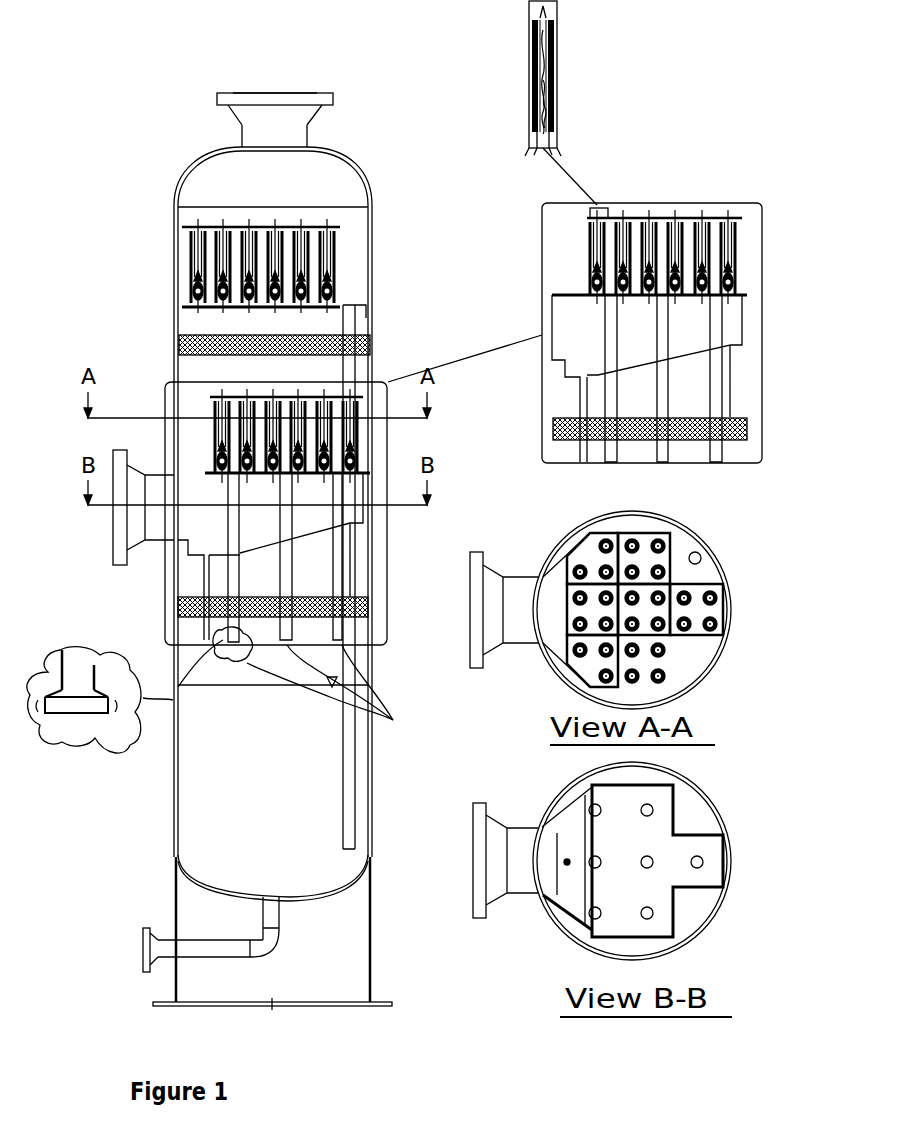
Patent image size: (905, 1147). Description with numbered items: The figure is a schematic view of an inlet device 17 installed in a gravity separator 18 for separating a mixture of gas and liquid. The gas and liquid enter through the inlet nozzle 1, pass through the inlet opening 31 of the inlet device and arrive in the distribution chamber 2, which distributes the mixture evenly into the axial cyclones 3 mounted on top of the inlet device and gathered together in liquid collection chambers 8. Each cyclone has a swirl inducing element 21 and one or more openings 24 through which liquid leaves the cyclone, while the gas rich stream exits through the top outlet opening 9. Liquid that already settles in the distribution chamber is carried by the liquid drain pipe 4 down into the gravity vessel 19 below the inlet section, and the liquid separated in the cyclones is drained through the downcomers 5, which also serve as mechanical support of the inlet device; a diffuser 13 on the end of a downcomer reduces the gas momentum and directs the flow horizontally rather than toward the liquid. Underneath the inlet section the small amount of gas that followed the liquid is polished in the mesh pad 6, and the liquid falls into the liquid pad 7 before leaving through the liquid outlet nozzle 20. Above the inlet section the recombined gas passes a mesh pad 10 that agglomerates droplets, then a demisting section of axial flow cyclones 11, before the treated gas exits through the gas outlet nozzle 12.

The inlet nozzle 1 is at (137, 520).
The distribution chamber 2 is at (307, 497).
The axial cyclone 3 is at (353, 442).
The liquid drain pipe 4 is at (212, 648).
The downcomer 5 is at (725, 765).
The mesh pad 6 is at (345, 607).
The liquid pad 7 is at (192, 793).
The liquid collection chamber 8 is at (215, 457).
The top outlet opening 9 is at (325, 397).
The mesh pad 10 is at (352, 332).
The axial flow cyclones 11 is at (333, 268).
The gas outlet nozzle 12 is at (278, 92).
The diffuser 13 is at (72, 705).
The inlet device 17 is at (542, 230).
The gravity separator 18 is at (177, 305).
The gravity vessel 19 is at (252, 367).
The liquid outlet nozzle 20 is at (195, 940).
The swirl inducing element 21 is at (558, 110).
The opening 24 is at (558, 52).
The inlet opening 31 is at (552, 300).